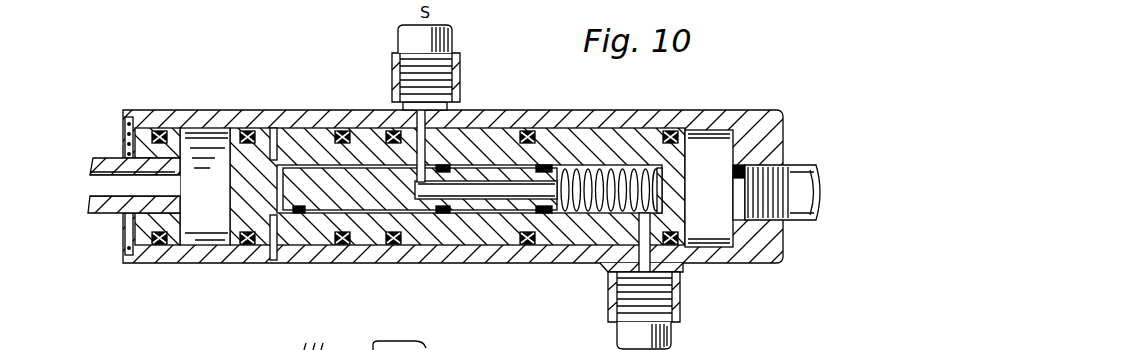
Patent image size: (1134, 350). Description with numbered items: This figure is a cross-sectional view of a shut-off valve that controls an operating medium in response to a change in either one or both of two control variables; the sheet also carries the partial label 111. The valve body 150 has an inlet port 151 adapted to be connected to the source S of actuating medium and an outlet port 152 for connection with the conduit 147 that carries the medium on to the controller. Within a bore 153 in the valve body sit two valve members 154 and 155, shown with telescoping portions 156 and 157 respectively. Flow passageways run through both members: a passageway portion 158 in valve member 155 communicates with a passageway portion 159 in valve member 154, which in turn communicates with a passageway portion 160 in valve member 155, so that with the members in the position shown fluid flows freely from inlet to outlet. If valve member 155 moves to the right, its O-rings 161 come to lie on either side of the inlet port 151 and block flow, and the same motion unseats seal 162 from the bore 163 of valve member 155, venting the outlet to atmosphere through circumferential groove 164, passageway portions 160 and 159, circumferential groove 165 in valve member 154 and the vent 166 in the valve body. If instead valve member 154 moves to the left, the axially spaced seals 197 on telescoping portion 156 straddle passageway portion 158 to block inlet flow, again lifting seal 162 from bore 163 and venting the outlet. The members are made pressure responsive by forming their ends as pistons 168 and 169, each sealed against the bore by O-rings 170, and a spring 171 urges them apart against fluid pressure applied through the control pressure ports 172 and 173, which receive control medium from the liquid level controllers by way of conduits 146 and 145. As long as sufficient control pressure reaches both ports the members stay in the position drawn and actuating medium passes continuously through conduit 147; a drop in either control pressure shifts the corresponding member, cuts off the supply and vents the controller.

The hydraulic unit 111 is at (295, 8).
The conduit 145 is at (805, 162).
The conduit 146 is at (118, 186).
The conduit 147 is at (672, 332).
The valve body 150 is at (521, 110).
The inlet port 151 is at (437, 143).
The outlet port 152 is at (622, 266).
The bore 153 is at (197, 130).
The valve member 154 is at (288, 155).
The valve member 155 is at (592, 135).
The telescoping portion 156 is at (353, 170).
The telescoping portion 157 is at (368, 250).
The passageway portion 158 is at (436, 150).
The passageway portion 159 is at (454, 236).
The passageway portion 160 is at (652, 222).
The O-rings 161 is at (342, 130).
The seal 162 is at (279, 258).
The bore 163 is at (307, 250).
The circumferential groove 164 is at (550, 250).
The circumferential groove 165 is at (319, 250).
The vent 166 is at (262, 258).
The piston 168 is at (237, 130).
The piston 169 is at (696, 140).
The O-rings 170 is at (252, 130).
The spring 171 is at (650, 191).
The control pressure port 172 is at (108, 158).
The control pressure port 173 is at (735, 175).
The seals 197 is at (546, 168).